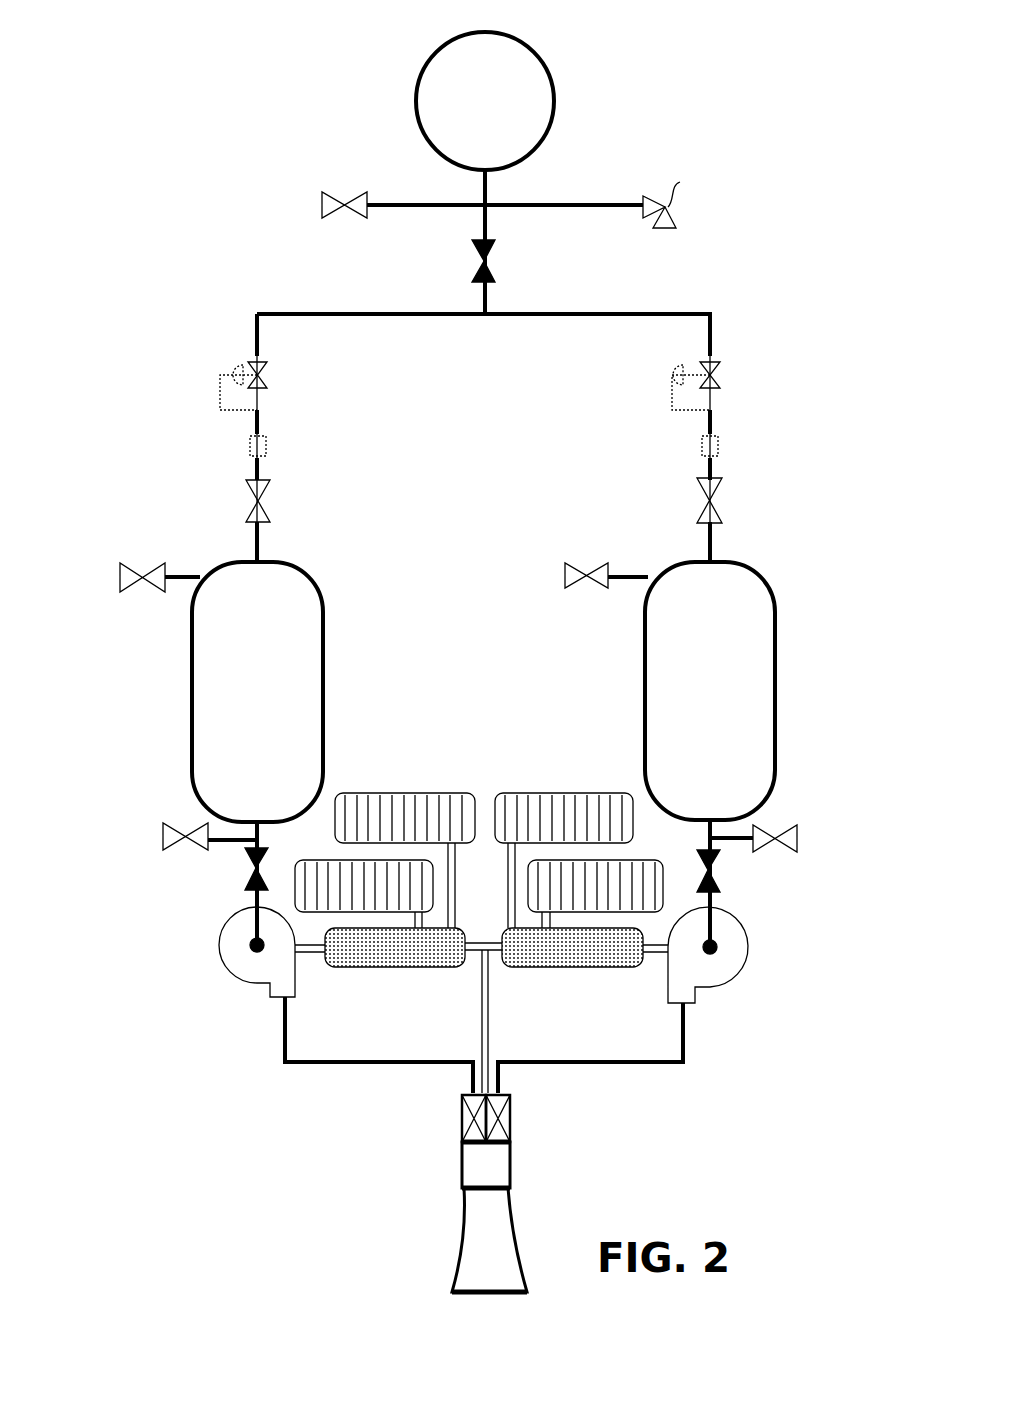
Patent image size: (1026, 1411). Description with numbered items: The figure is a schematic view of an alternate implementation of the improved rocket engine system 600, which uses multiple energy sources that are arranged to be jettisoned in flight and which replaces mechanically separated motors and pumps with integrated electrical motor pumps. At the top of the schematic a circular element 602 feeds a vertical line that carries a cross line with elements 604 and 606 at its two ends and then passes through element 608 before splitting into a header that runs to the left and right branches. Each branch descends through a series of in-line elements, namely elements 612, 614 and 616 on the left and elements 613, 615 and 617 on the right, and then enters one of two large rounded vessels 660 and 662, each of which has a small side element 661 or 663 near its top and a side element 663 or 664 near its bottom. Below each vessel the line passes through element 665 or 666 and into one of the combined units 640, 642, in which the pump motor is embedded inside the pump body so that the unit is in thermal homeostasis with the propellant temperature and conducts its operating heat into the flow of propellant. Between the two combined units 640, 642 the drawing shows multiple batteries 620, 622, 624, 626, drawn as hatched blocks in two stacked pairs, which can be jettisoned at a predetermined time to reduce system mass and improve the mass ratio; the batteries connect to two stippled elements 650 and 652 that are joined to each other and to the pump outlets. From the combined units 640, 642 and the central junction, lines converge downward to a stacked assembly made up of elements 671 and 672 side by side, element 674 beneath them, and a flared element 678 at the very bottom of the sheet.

The improved rocket engine system 600 is at (155, 50).
The pressurant tank 602 is at (536, 52).
The fill and drain valve 604 is at (322, 216).
The relief valve 606 is at (665, 228).
The pressurant check valve 608 is at (470, 280).
The pressure regulator 612 is at (265, 378).
The pressure regulator 613 is at (718, 378).
The filter 614 is at (268, 452).
The filter 615 is at (720, 455).
The isolation valve 616 is at (270, 520).
The isolation valve 617 is at (722, 522).
The battery 620 is at (452, 793).
The battery 622 is at (630, 793).
The battery 624 is at (632, 862).
The battery 626 is at (340, 862).
The combined unit 640 is at (222, 965).
The combined unit 642 is at (745, 965).
The fuel conditioning unit 650 is at (398, 968).
The oxidizer conditioning unit 652 is at (588, 968).
The fuel tank 660 is at (192, 665).
The fuel tank vent valve 661 is at (120, 590).
The oxidizer tank 662 is at (775, 650).
The fill and drain valve 663 is at (565, 572).
The oxidizer drain valve 664 is at (797, 850).
The fuel check valve 665 is at (250, 860).
The oxidizer check valve 666 is at (718, 862).
The fuel injector 671 is at (460, 1120).
The oxidizer injector 672 is at (512, 1120).
The combustion chamber 674 is at (512, 1160).
The nozzle 678 is at (465, 1294).